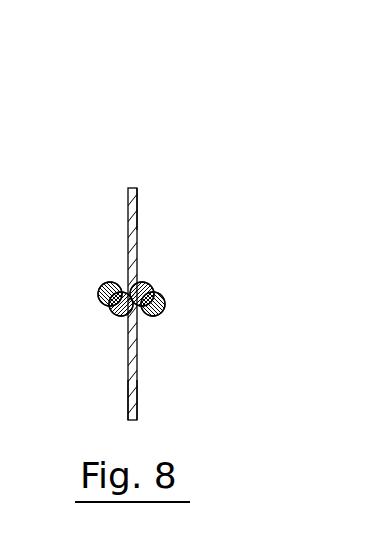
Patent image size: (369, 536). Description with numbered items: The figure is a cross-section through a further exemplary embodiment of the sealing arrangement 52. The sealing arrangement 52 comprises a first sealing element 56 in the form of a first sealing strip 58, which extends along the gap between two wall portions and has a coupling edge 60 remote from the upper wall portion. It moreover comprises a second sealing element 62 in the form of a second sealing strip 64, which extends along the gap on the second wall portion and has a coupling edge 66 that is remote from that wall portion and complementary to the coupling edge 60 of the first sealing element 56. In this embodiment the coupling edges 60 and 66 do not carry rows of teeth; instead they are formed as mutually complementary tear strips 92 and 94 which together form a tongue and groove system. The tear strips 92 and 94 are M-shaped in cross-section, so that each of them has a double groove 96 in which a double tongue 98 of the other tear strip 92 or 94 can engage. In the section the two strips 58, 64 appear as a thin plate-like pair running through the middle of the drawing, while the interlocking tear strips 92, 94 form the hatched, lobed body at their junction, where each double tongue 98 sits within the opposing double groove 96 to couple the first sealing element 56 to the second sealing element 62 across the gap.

The sealing arrangement 52 is at (98, 146).
The first sealing element 56 is at (127, 212).
The first sealing strip 58 is at (137, 193).
The coupling edge 60 is at (97, 296).
The second sealing element 62 is at (127, 404).
The second sealing strip 64 is at (137, 395).
The coupling edge 66 is at (165, 305).
The tear strip 92 is at (109, 283).
The tear strip 94 is at (153, 320).
The double groove 96 is at (138, 281).
The double tongue 98 is at (157, 291).